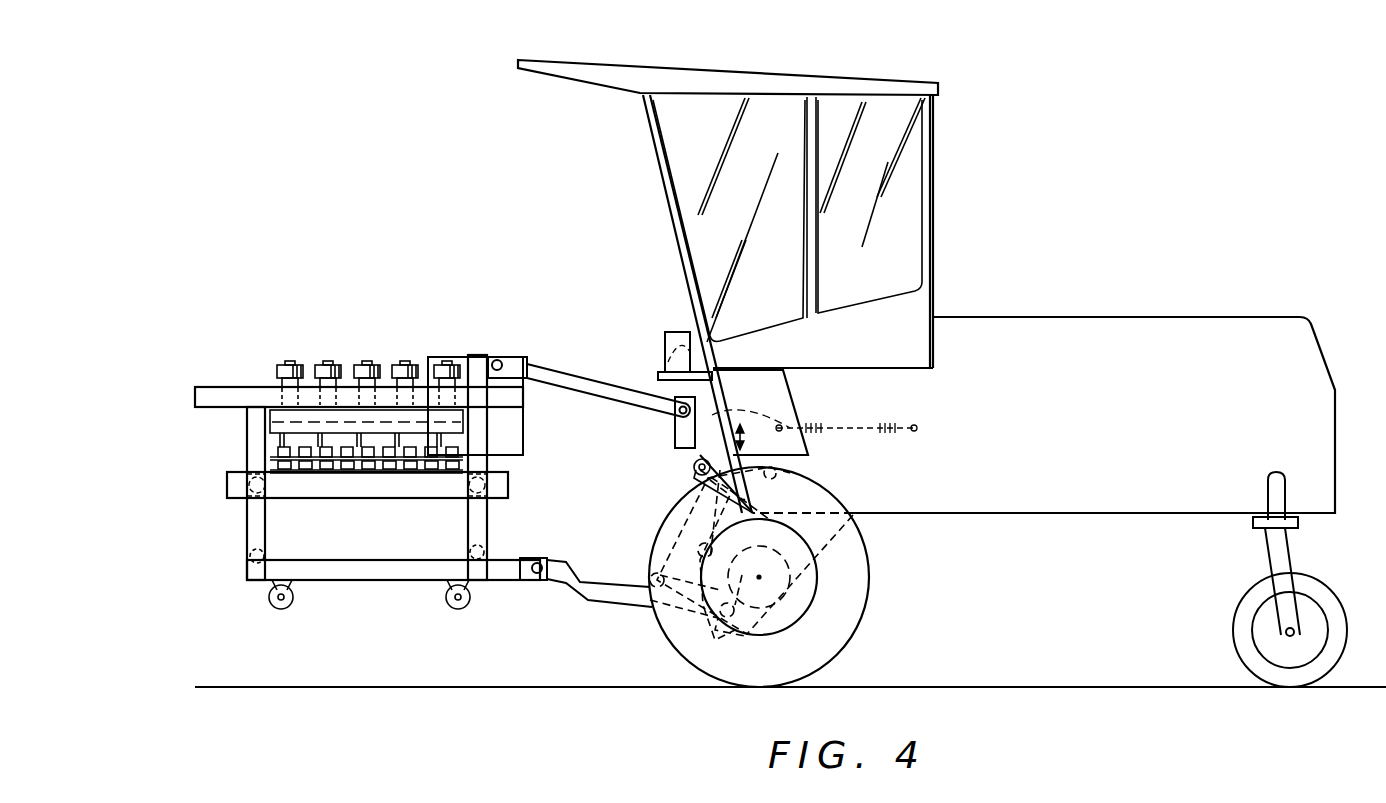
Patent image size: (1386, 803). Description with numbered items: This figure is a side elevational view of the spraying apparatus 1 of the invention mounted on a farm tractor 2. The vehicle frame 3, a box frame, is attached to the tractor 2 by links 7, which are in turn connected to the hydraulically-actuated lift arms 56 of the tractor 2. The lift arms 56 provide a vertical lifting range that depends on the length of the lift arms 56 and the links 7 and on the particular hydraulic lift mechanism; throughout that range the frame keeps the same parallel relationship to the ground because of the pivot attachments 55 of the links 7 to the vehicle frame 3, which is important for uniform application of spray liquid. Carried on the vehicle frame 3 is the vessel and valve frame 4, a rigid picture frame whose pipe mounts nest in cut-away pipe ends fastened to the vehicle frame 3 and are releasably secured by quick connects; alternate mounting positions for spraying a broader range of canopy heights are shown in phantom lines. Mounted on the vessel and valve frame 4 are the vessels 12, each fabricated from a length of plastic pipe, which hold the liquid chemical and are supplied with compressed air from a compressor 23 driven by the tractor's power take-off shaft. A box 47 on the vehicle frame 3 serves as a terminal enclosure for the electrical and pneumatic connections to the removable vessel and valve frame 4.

The spraying apparatus 1 is at (534, 246).
The farm tractor 2 is at (938, 140).
The vehicle frame 3 is at (217, 390).
The vessel and valve frame 4 is at (237, 492).
The links 7 is at (603, 392).
The vessels 12 is at (323, 363).
The compressor 23 is at (664, 352).
The box 47 is at (428, 357).
The pivot attachments 55 is at (498, 360).
The lift arms 56 is at (677, 523).